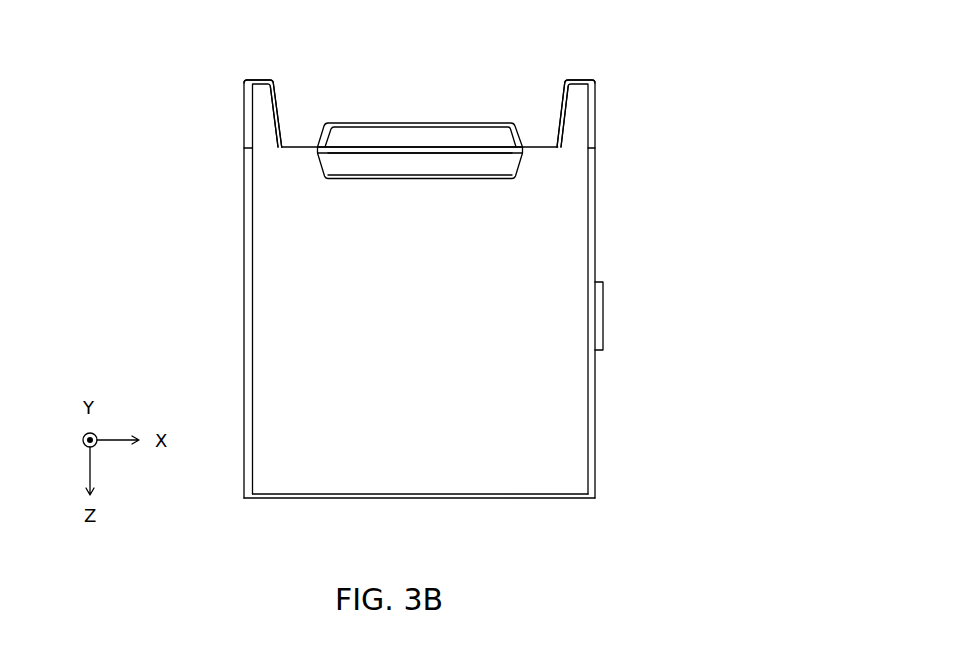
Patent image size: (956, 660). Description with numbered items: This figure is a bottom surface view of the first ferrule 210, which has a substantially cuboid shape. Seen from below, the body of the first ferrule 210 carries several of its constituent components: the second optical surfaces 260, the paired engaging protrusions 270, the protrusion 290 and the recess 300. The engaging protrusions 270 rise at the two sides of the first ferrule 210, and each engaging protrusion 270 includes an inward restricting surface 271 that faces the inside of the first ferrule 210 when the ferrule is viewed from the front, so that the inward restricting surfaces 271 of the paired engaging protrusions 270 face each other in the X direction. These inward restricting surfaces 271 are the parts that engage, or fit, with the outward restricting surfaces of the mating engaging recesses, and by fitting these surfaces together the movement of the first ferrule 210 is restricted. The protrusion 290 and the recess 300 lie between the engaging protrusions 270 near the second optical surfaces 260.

The first ferrule 210 is at (643, 57).
The second optical surfaces 260 is at (400, 153).
The engaging protrusions 270 is at (575, 118).
The inward restricting surface 271 is at (557, 132).
The protrusion 290 is at (355, 138).
The recess 300 is at (422, 172).